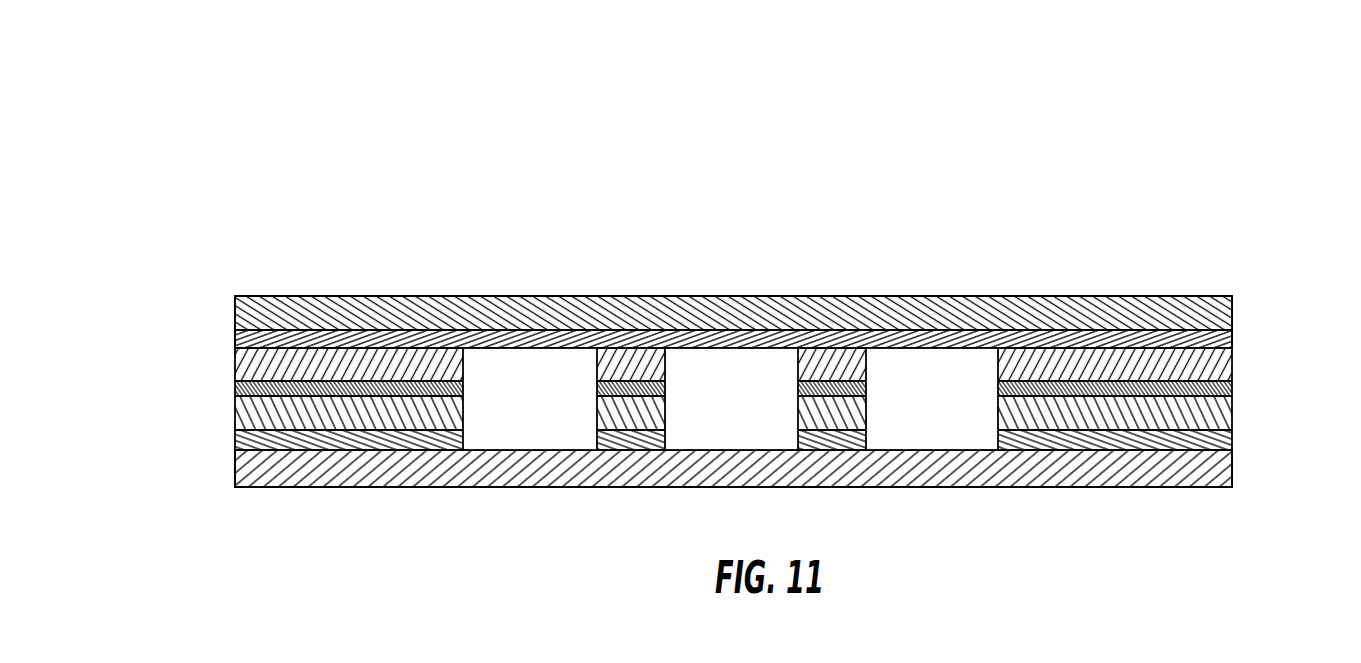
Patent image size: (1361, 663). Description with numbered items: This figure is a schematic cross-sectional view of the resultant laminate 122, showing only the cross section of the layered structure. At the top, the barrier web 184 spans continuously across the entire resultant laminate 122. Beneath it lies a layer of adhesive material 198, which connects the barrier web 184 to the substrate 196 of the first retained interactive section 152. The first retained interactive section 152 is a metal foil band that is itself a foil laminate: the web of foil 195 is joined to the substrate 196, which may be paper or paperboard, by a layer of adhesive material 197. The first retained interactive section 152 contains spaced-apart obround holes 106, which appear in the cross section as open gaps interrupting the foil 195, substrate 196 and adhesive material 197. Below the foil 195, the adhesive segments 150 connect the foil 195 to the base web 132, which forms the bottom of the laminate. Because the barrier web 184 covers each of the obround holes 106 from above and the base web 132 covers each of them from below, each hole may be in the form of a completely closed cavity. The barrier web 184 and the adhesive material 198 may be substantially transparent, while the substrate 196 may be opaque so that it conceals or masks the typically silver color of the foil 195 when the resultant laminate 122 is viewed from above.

The resultant laminate 122 is at (1188, 146).
The barrier web 184 is at (405, 296).
The layer of adhesive material 198 is at (236, 335).
The first retained interactive section 152 is at (764, 394).
The substrate 196 is at (1232, 364).
The layer of adhesive material 197 is at (1232, 390).
The foil 195 is at (1232, 420).
The adhesive segments 150 is at (232, 438).
The base web 132 is at (1232, 472).
The obround holes 106 is at (546, 414).